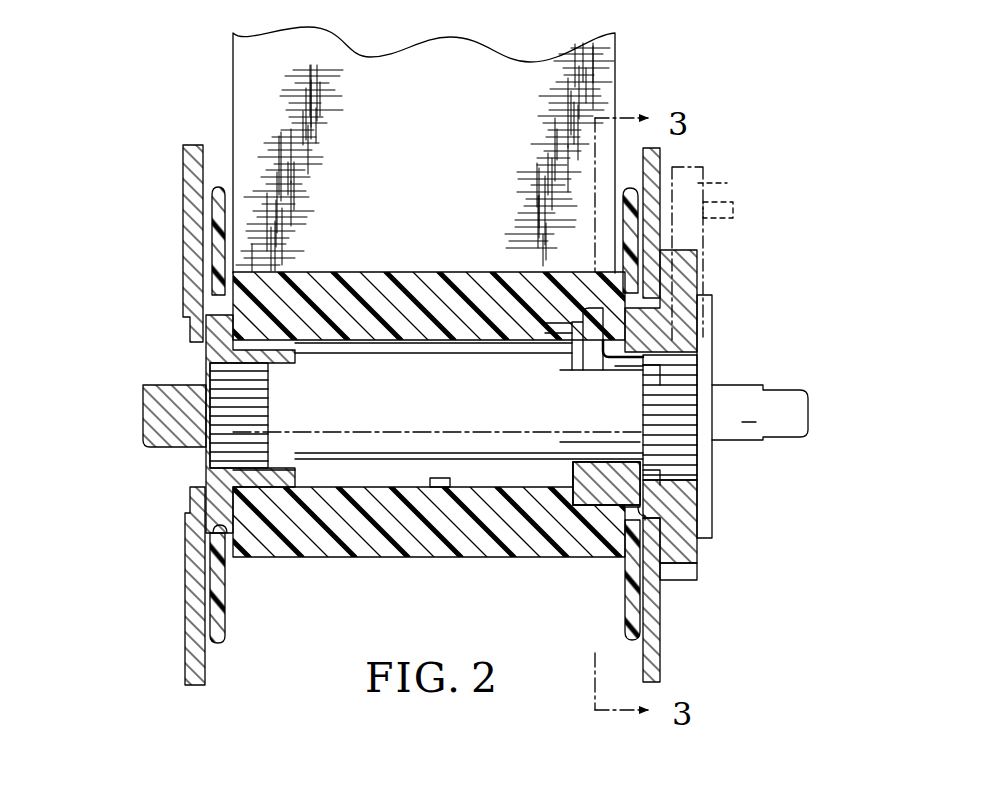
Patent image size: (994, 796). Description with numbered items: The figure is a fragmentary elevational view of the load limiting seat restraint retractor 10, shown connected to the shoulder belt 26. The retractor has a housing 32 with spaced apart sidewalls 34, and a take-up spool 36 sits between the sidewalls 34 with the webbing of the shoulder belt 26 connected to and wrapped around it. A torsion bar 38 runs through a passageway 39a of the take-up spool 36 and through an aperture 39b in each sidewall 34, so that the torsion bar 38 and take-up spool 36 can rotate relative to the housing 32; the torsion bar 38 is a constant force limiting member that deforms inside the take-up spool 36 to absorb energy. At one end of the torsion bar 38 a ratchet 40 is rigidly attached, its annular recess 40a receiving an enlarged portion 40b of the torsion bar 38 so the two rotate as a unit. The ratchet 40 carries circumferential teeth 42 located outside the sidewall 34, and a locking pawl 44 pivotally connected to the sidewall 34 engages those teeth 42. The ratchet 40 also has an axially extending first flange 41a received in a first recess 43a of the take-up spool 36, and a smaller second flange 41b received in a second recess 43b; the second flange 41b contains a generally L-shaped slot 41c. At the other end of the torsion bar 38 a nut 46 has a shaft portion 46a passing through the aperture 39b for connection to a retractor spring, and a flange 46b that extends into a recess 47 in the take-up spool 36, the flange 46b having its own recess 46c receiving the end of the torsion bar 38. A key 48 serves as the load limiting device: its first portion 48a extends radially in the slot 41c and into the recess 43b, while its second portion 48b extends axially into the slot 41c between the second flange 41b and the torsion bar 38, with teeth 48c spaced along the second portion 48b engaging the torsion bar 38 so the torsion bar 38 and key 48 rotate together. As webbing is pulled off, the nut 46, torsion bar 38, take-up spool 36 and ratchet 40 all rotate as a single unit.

The load limiting seat restraint retractor 10 is at (786, 152).
The shoulder belt 26 is at (487, 57).
The housing 32 is at (663, 623).
The sidewalls 34 is at (183, 203).
The take-up spool 36 is at (413, 545).
The torsion bar 38 is at (328, 446).
The passageway 39a is at (440, 482).
The aperture 39b is at (195, 482).
The ratchet 40 is at (690, 545).
The annular recess 40a is at (618, 368).
The enlarged portion 40b is at (682, 407).
The first flange 41a is at (625, 505).
The second flange 41b is at (583, 478).
The slot 41c is at (640, 352).
The teeth 42 is at (683, 573).
The first recess 43a is at (677, 468).
The second recess 43b is at (583, 505).
The locking pawl 44 is at (730, 185).
The nut 46 is at (182, 385).
The shaft portion 46a is at (148, 390).
The flange 46b is at (266, 474).
The recess 46c is at (215, 455).
The recess 47 is at (218, 533).
The key 48 is at (607, 332).
The first portion 48a is at (598, 317).
The second portion 48b is at (650, 385).
The teeth 48c is at (593, 370).